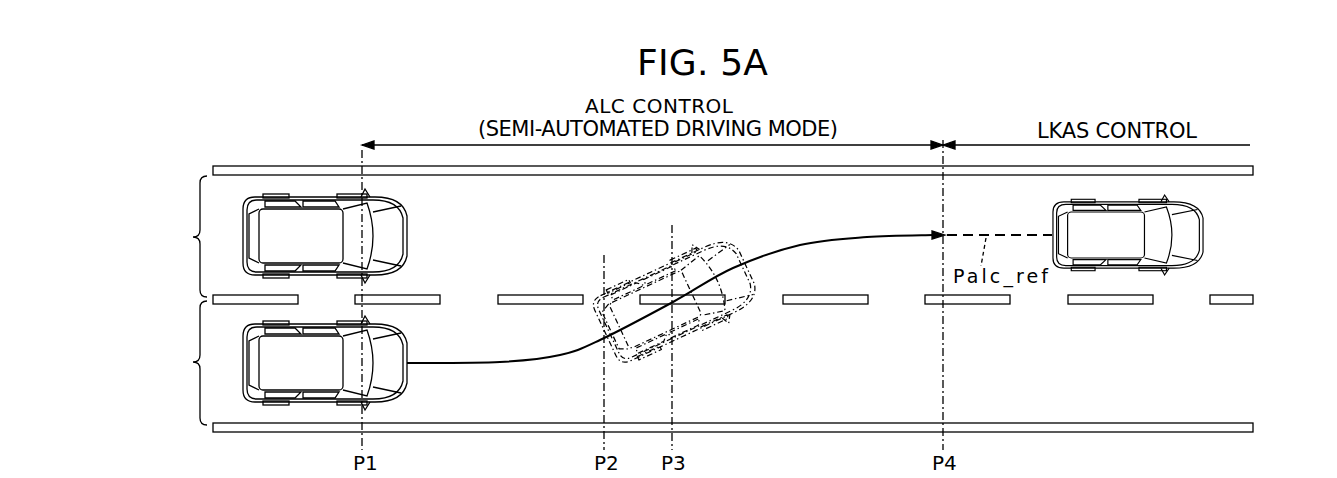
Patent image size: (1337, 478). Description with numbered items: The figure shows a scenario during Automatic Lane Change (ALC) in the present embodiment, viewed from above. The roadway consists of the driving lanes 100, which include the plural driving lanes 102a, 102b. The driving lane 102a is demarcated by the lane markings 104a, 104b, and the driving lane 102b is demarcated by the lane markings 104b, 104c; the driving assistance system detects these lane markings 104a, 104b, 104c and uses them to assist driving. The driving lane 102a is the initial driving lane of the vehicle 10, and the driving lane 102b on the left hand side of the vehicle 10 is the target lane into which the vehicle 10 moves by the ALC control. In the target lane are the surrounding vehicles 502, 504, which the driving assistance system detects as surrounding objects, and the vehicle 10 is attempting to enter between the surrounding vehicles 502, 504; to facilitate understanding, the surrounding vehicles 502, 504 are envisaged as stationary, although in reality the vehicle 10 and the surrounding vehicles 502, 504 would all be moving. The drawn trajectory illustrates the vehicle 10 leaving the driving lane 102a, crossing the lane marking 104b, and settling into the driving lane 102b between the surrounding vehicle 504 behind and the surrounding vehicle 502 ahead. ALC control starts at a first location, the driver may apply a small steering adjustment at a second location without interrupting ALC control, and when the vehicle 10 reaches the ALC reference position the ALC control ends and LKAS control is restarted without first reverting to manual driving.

The driving lanes 100 is at (197, 150).
The driving lane 102a is at (173, 363).
The driving lane 102b is at (173, 236).
The lane marking 104a is at (1253, 428).
The lane marking 104b is at (1253, 300).
The lane marking 104c is at (1253, 170).
The vehicle 10 is at (402, 372).
The surrounding vehicle 502 is at (1200, 218).
The surrounding vehicle 504 is at (407, 227).